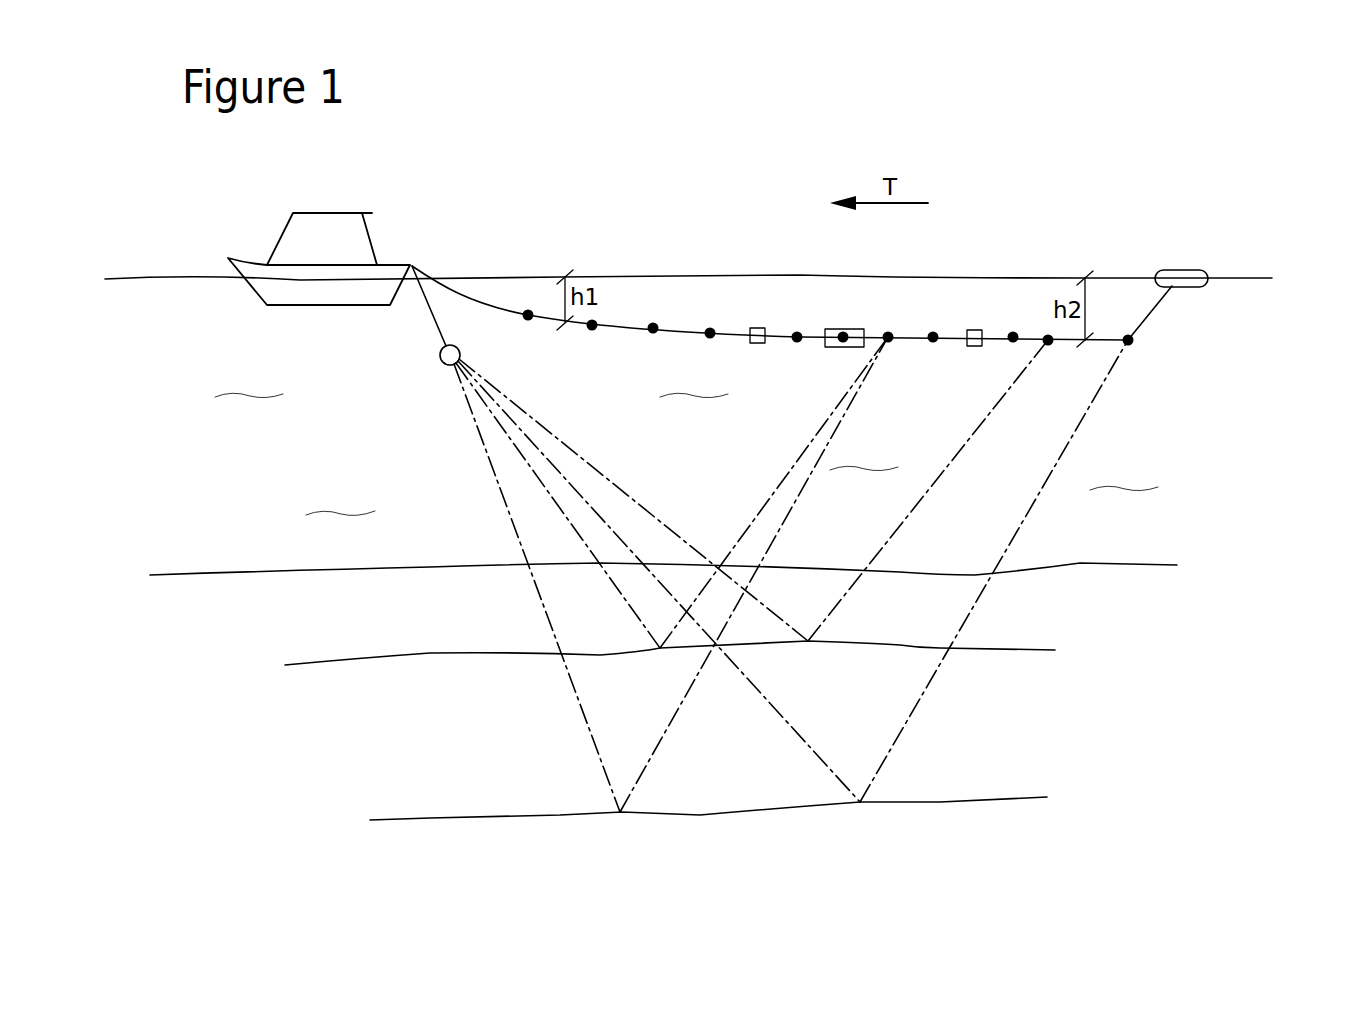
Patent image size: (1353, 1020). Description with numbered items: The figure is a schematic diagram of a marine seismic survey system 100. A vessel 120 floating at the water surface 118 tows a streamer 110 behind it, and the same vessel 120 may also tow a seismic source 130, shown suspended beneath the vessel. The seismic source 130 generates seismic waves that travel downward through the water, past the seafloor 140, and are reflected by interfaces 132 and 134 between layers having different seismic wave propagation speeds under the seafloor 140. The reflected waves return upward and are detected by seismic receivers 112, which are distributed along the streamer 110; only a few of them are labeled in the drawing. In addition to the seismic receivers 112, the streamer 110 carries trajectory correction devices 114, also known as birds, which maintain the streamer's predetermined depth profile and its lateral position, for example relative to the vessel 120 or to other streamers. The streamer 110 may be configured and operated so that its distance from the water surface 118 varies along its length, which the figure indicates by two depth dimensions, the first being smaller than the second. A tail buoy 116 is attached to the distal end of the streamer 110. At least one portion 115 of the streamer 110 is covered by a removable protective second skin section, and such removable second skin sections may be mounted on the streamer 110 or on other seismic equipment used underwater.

The marine seismic survey system 100 is at (550, 187).
The streamer 110 is at (627, 330).
The seismic receivers 112 is at (528, 315).
The trajectory correction devices 114 is at (757, 328).
The portion of the streamer 115 is at (845, 329).
The tail buoy 116 is at (1178, 278).
The water surface 118 is at (660, 275).
The vessel 120 is at (327, 212).
The seismic source 130 is at (443, 362).
The interface 132 is at (1020, 650).
The interface 134 is at (965, 800).
The seafloor 140 is at (1080, 563).